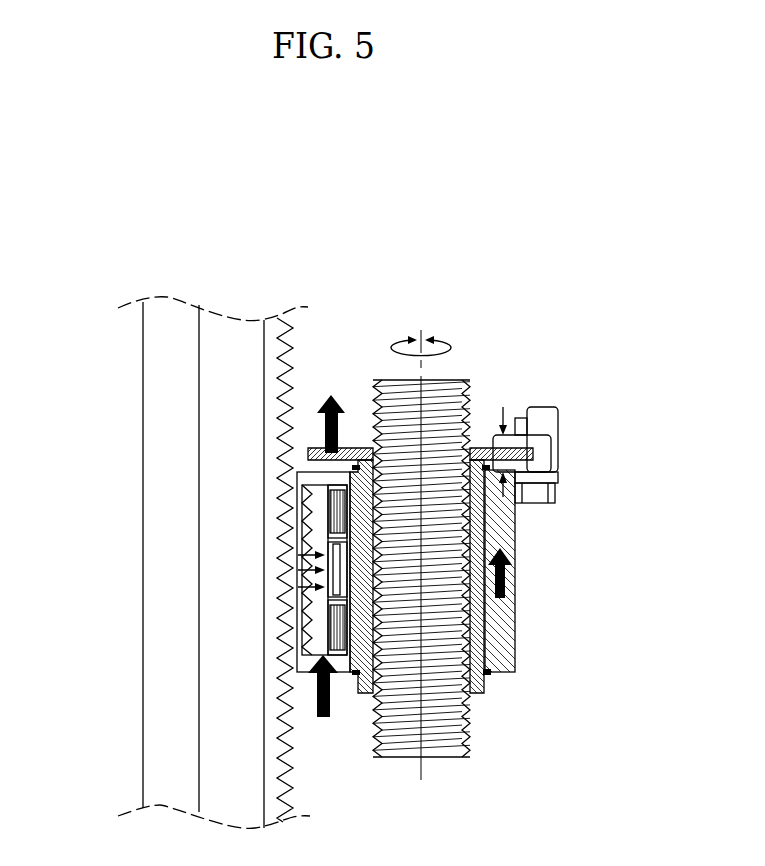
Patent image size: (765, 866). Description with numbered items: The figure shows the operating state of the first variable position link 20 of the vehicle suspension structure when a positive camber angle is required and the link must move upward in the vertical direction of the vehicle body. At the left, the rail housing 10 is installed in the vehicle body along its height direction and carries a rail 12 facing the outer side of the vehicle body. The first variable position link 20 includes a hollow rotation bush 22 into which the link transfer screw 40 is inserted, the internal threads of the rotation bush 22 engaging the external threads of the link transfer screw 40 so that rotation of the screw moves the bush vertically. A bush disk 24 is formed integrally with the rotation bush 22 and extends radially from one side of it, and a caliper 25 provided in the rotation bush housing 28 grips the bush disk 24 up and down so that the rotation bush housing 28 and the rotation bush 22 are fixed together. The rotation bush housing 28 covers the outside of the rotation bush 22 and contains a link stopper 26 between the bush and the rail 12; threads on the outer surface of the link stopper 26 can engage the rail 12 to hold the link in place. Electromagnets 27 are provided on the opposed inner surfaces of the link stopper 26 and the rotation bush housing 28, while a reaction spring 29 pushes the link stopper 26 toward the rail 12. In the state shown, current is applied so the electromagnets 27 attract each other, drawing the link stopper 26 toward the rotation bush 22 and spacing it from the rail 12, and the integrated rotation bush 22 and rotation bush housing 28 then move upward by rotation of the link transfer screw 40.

The rail housing 10 is at (167, 458).
The rail 12 is at (283, 395).
The first variable position link 20 is at (342, 203).
The rotation bush 22 is at (477, 533).
The bush disk 24 is at (520, 452).
The caliper 25 is at (527, 440).
The link stopper 26 is at (315, 603).
The electromagnets 27 is at (340, 548).
The rotation bush housing 28 is at (500, 630).
The reaction spring 29 is at (333, 630).
The link transfer screw 40 is at (470, 400).